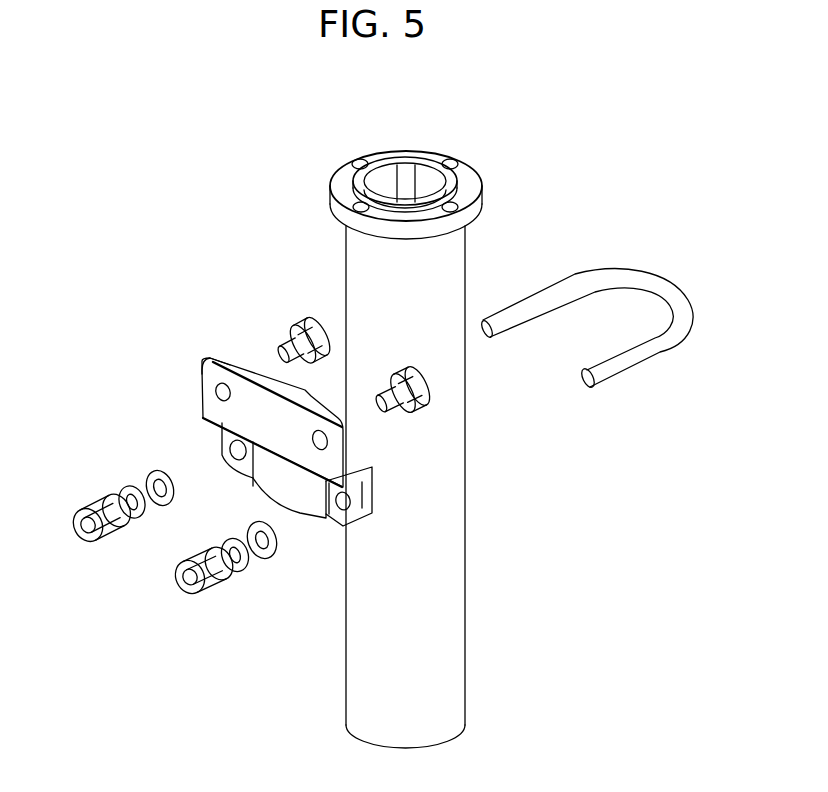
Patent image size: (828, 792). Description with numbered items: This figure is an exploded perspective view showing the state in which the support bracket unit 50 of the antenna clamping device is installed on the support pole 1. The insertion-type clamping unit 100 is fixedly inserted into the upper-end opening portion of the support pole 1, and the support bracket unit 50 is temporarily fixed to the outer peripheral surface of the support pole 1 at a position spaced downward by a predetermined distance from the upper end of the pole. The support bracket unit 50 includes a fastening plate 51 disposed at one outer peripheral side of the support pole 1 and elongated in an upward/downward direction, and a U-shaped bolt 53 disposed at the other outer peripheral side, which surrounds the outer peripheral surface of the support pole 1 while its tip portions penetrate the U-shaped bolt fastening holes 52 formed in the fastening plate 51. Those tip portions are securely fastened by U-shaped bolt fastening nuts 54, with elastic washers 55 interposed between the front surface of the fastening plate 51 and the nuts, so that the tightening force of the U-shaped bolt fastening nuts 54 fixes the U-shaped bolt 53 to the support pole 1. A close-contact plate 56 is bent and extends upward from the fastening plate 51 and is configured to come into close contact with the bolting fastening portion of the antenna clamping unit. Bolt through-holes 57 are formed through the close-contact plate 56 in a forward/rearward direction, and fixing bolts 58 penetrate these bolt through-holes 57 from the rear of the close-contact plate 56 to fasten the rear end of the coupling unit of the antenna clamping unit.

The insertion-type clamping unit 100 is at (490, 128).
The support pole 1 is at (448, 572).
The support bracket unit 50 is at (183, 320).
The fastening plate 51 is at (305, 497).
The U-shaped bolt fastening holes 52 is at (230, 447).
The U-shaped bolt 53 is at (643, 285).
The U-shaped bolt fastening nuts 54 is at (87, 500).
The elastic washers 55 is at (150, 476).
The close-contact plate 56 is at (250, 388).
The bolt through-holes 57 is at (216, 391).
The fixing bolts 58 is at (310, 323).